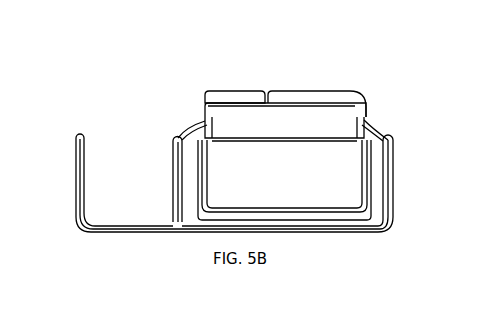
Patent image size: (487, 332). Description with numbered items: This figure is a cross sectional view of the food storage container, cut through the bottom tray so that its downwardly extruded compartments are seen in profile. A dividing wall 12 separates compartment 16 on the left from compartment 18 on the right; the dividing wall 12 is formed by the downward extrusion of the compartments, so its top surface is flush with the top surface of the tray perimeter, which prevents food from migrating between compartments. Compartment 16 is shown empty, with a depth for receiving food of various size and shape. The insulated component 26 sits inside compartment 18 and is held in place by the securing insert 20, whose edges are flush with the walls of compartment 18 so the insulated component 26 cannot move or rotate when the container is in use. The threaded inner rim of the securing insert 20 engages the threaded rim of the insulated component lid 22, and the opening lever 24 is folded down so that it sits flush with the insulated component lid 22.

The dividing wall 12 is at (5, 106).
The compartment 16 is at (118, 185).
The compartment 18 is at (373, 165).
The securing insert 20 is at (384, 128).
The insulated component lid 22 is at (298, 80).
The opening lever 24 is at (243, 80).
The insulated component 26 is at (380, 189).